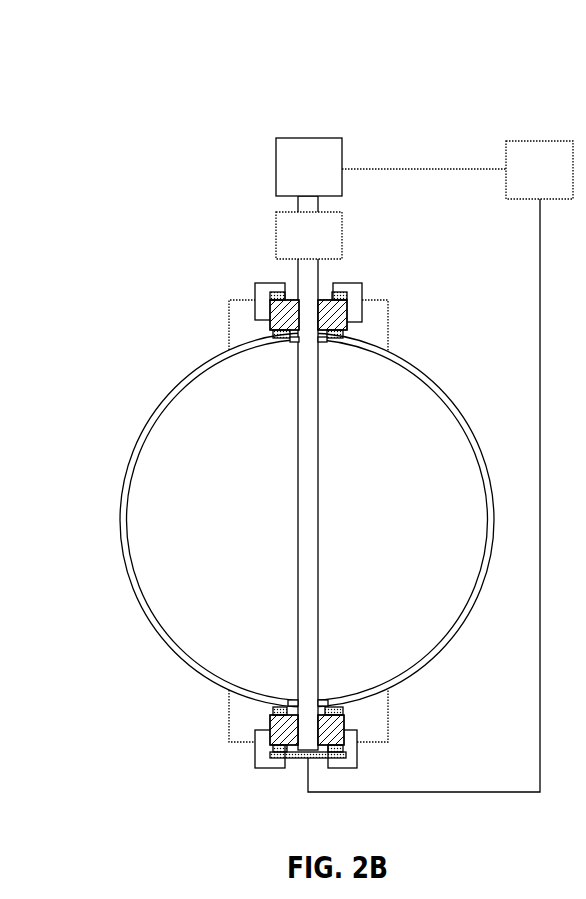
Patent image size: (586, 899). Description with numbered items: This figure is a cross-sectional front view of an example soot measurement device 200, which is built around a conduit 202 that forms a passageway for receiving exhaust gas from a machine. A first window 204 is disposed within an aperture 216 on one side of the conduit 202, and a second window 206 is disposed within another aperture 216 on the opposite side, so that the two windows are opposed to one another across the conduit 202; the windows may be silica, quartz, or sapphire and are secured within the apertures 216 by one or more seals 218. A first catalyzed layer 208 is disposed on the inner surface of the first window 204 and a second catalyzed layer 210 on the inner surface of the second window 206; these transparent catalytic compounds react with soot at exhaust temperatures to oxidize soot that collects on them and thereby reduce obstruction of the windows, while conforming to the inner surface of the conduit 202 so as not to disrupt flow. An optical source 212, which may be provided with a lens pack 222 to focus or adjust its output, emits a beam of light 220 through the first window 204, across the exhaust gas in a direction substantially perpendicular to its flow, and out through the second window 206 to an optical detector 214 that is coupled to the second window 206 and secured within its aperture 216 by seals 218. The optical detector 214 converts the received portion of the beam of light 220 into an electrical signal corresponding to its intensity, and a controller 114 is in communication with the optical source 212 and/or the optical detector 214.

The controller 114 is at (539, 170).
The soot measurement device 200 is at (118, 63).
The conduit 202 is at (197, 375).
The first window 204 is at (343, 312).
The second window 206 is at (328, 706).
The first catalyzed layer 208 is at (330, 340).
The second catalyzed layer 210 is at (292, 700).
The optical source 212 is at (309, 167).
The optical detector 214 is at (346, 756).
The aperture 216 is at (288, 283).
The seal 218 is at (340, 296).
The beam of light 220 is at (318, 518).
The lens pack 222 is at (309, 235).